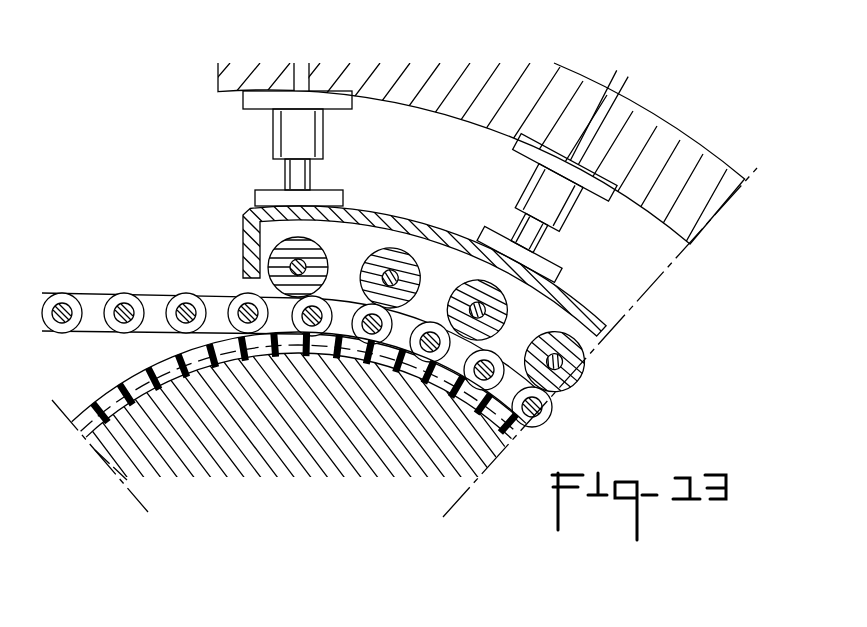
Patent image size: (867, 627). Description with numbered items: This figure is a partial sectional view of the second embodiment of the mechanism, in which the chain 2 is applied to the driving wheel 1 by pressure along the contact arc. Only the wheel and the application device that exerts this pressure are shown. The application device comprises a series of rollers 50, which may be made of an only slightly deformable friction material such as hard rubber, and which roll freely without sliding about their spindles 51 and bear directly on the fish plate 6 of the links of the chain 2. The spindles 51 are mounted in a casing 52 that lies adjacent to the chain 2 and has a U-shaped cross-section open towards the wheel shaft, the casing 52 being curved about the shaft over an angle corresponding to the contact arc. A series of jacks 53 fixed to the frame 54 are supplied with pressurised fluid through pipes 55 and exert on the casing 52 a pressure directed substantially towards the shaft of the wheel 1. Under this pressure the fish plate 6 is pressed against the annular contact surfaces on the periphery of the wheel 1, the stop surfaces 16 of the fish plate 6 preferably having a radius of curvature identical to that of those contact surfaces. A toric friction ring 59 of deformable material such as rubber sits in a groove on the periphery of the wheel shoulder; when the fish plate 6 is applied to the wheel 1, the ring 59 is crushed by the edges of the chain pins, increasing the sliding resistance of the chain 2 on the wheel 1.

The driving wheel 1 is at (157, 443).
The chain 2 is at (290, 322).
The fish plate 6 is at (290, 324).
The stop surfaces 16 is at (147, 337).
The rollers 50 is at (322, 258).
The spindles 51 is at (477, 305).
The casing 52 is at (565, 300).
The jacks 53 is at (268, 151).
The frame 54 is at (473, 106).
The pipes 55 is at (620, 84).
The toric friction ring 59 is at (86, 421).